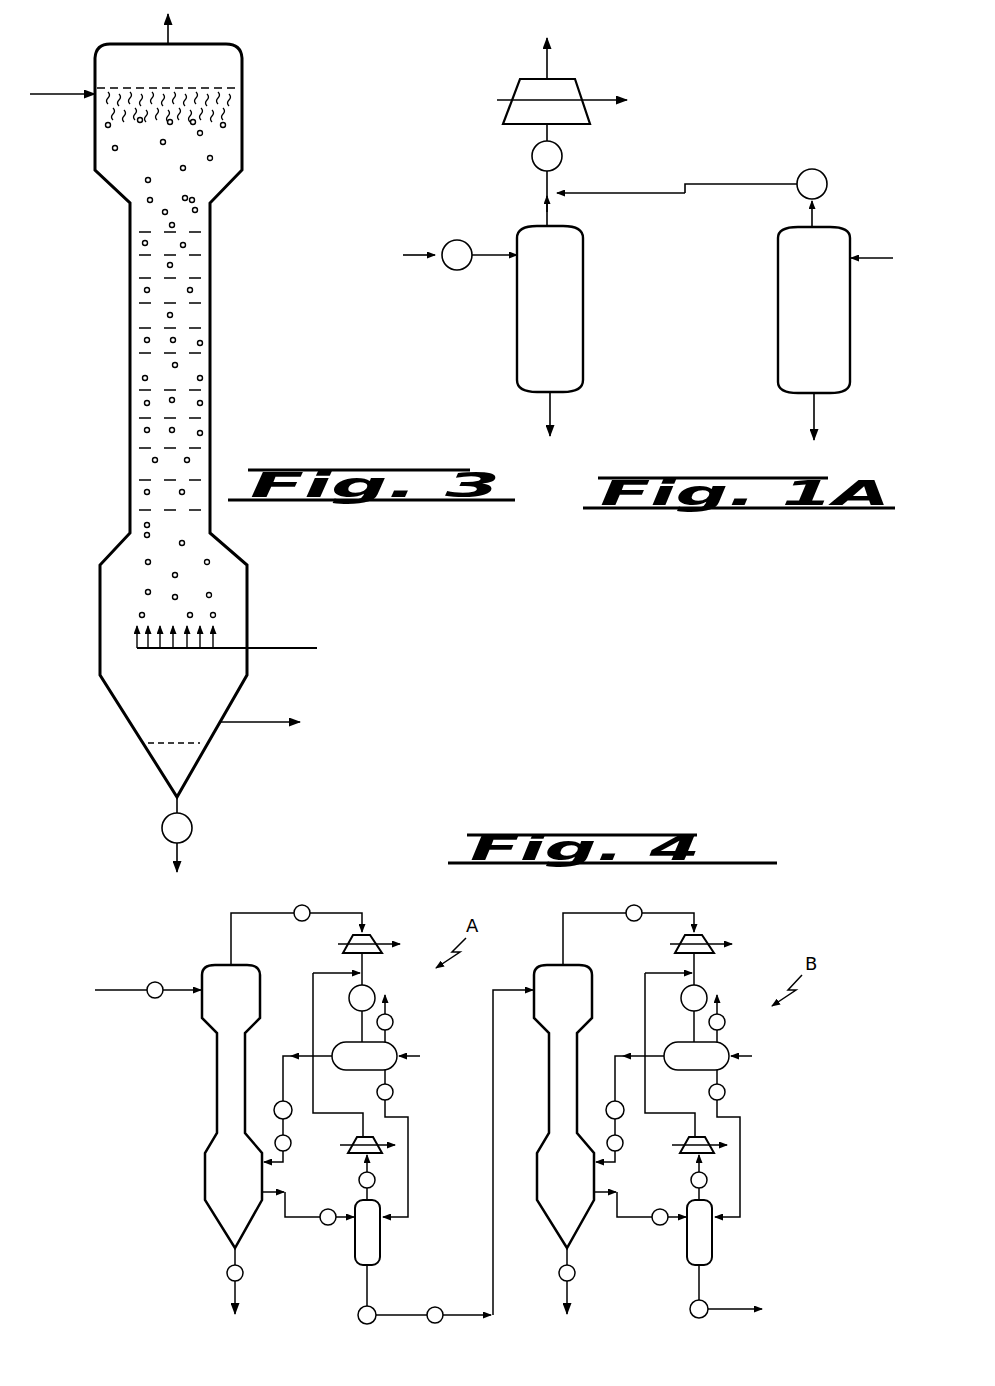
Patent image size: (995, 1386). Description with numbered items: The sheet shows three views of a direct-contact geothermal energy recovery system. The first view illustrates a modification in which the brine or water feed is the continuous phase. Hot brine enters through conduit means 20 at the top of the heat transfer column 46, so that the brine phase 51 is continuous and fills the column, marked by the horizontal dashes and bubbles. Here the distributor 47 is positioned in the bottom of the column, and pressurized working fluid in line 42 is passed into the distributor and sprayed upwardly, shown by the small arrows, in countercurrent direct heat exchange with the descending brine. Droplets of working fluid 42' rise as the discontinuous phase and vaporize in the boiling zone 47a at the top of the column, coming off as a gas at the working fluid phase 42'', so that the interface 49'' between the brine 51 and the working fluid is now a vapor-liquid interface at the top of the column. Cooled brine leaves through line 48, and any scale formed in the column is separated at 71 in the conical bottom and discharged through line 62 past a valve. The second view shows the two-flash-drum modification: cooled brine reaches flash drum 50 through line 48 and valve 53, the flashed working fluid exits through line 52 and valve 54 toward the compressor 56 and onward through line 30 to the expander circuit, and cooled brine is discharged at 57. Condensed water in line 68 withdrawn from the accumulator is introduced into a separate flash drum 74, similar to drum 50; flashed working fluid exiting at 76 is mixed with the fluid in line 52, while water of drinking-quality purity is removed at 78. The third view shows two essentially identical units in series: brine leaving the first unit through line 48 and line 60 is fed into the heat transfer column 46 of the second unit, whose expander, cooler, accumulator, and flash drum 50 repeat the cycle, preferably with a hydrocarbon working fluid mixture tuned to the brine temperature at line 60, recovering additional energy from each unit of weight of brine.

In FIG. 3, the conduit means 20 is at (60, 91).
In FIG. 4, the conduit means 20 is at (116, 984).
In FIG. 1A, the line 30 is at (545, 67).
In FIG. 3, the line 42 is at (227, 632).
In FIG. 3, the droplets of working fluid 42' is at (253, 374).
In FIG. 3, the working fluid phase 42'' is at (262, 48).
In FIG. 3, the heat transfer column 46 is at (214, 383).
In FIG. 3, the distributor 47 is at (207, 658).
In FIG. 3, the boiling zone 47a is at (231, 102).
In FIG. 3, the line 48 is at (256, 722).
In FIG. 1A, the line 48 is at (418, 258).
In FIG. 3, the interface 49'' is at (197, 90).
In FIG. 1A, the flash drum 50 is at (551, 325).
In FIG. 3, the brine phase 51 is at (200, 292).
In FIG. 1A, the line 52 is at (545, 220).
In FIG. 1A, the valve 53 is at (457, 271).
In FIG. 1A, the valve 54 is at (563, 156).
In FIG. 1A, the compressor 56 is at (514, 126).
In FIG. 1A, the flash drum discharge 57 is at (555, 407).
In FIG. 4, the line 60 is at (512, 1134).
In FIG. 3, the line 62 is at (182, 853).
In FIG. 1A, the line 68 is at (882, 256).
In FIG. 3, the scale separation point 71 is at (178, 773).
In FIG. 1A, the separate flash drum 74 is at (818, 323).
In FIG. 1A, the flashed working fluid outlet 76 is at (815, 213).
In FIG. 1A, the water outlet 78 is at (817, 410).